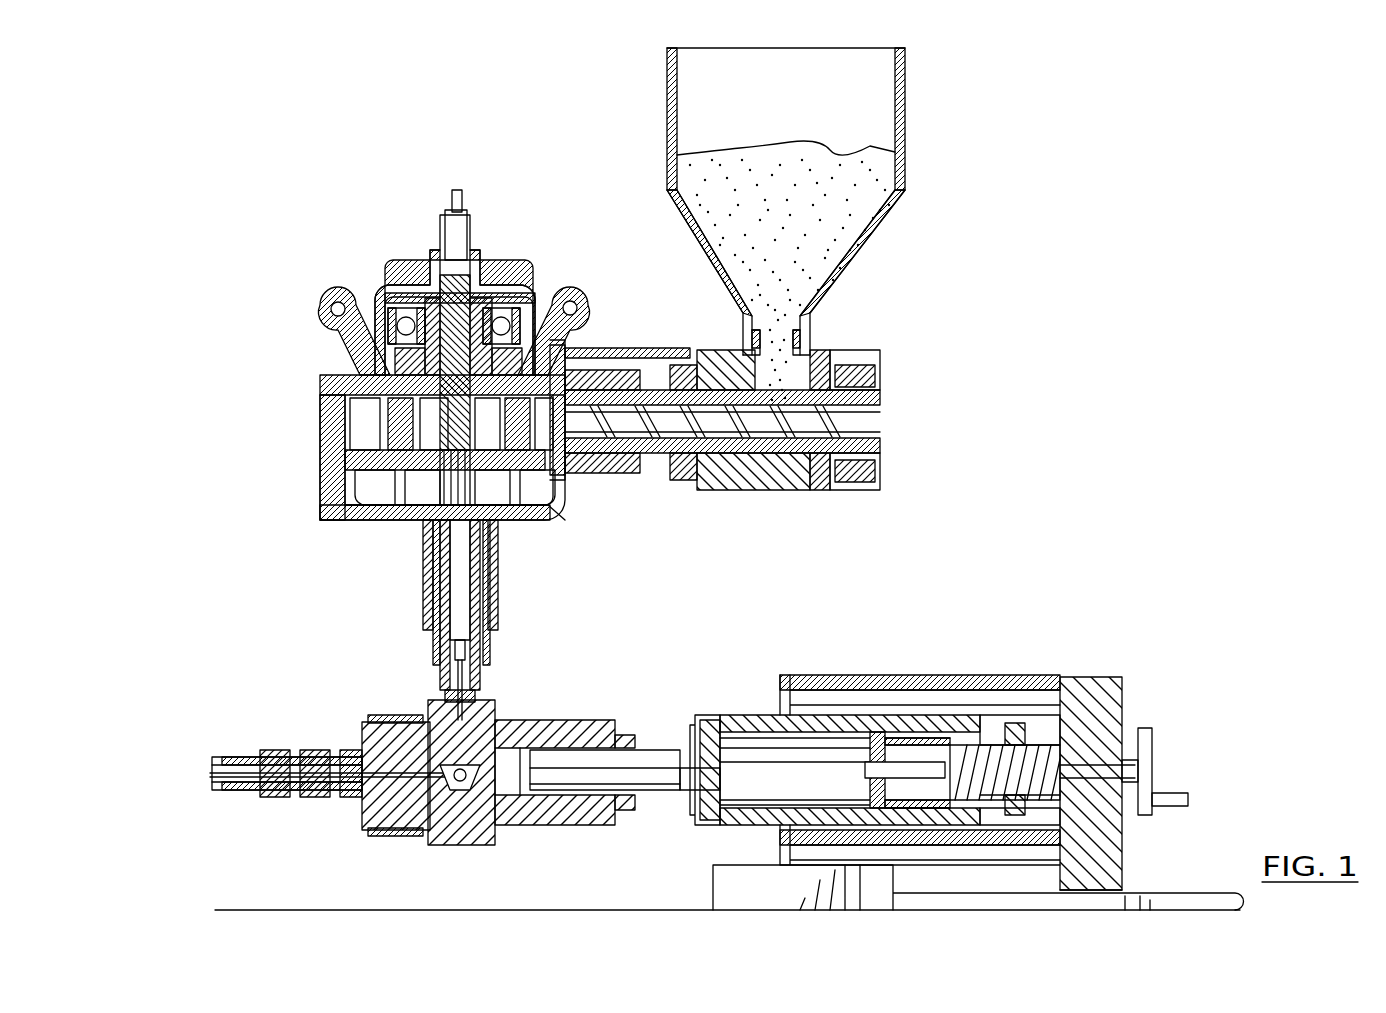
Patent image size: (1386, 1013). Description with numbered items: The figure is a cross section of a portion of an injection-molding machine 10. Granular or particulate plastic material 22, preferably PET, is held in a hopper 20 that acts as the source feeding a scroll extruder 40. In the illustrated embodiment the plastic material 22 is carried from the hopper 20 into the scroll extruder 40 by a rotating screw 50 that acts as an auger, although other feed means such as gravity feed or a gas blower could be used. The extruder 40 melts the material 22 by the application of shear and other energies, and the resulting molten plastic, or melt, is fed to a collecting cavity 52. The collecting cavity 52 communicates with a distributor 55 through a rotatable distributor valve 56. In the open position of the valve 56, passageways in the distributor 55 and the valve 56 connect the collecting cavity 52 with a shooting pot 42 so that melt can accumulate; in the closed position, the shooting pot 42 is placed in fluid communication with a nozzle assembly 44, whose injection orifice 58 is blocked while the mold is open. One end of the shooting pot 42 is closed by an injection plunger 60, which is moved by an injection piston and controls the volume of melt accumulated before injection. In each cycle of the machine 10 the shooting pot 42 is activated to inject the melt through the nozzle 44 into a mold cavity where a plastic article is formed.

The injection-molding machine 10 is at (1012, 307).
The hopper 20 is at (667, 128).
The plastic material 22 is at (705, 212).
The scroll extruder 40 is at (362, 263).
The shooting pot 42 is at (512, 800).
The nozzle assembly 44 is at (250, 790).
The rotating screw 50 is at (648, 425).
The collecting cavity 52 is at (423, 592).
The distributor 55 is at (385, 742).
The distributor valve 56 is at (412, 722).
The injection orifice 58 is at (212, 775).
The injection plunger 60 is at (648, 765).